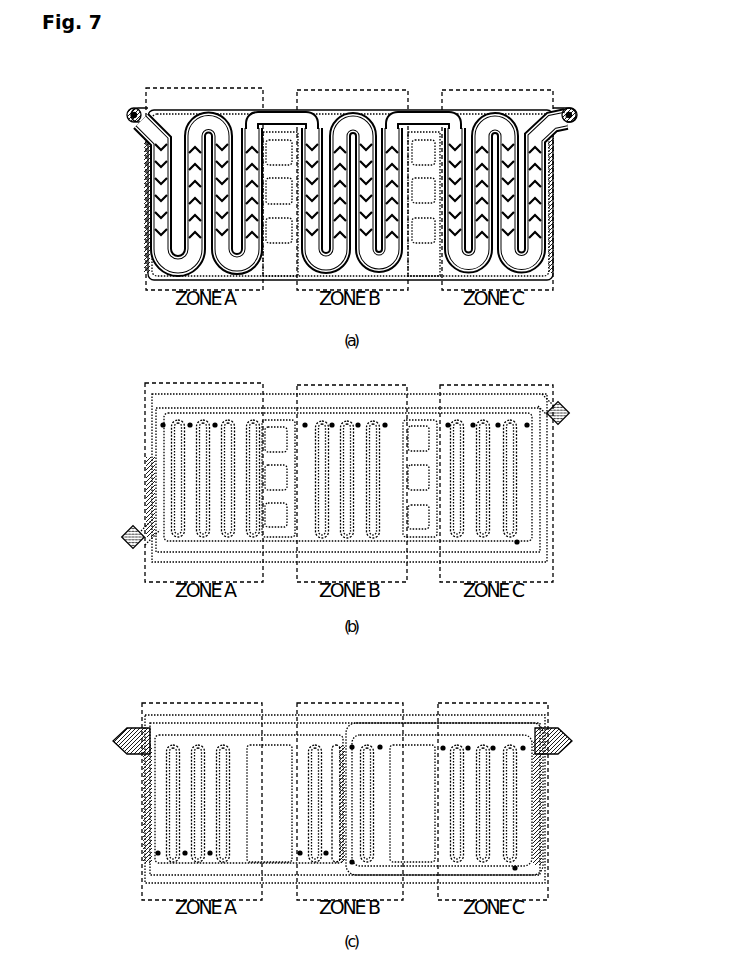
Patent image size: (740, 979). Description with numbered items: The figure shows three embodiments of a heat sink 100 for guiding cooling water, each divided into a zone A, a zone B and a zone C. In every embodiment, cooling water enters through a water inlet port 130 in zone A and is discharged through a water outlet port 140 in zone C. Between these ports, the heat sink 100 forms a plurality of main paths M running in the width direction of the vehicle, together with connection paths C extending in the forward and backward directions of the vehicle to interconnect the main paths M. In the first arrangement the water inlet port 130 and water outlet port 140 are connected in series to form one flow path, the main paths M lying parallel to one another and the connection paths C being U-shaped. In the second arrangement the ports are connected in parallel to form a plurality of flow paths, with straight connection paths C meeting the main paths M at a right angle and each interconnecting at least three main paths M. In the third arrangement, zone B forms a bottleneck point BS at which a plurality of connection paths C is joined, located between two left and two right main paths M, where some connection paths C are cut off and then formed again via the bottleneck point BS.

The heat sink 100 is at (588, 196).
The water inlet port 130 is at (127, 115).
The water outlet port 140 is at (577, 114).
The connection path C is at (188, 116).
The main path M is at (243, 130).
The bottleneck point BS is at (352, 862).